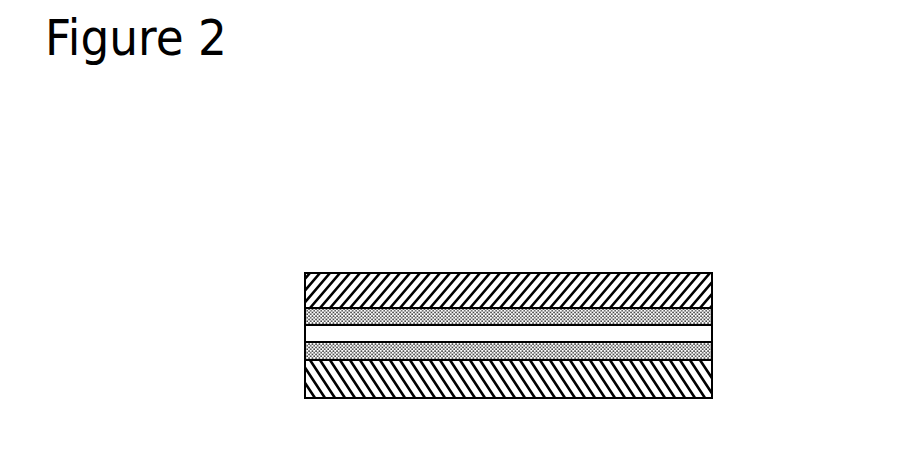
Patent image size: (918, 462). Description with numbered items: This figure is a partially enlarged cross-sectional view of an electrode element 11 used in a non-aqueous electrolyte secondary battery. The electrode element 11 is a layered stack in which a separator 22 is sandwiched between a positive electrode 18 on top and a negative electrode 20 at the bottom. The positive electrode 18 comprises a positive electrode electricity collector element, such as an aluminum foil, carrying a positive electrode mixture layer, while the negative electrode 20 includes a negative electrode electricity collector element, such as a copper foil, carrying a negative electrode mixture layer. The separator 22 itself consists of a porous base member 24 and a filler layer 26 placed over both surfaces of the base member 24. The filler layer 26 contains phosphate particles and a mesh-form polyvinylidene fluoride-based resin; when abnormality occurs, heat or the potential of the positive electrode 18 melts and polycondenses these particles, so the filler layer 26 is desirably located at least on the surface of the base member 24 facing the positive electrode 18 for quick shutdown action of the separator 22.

The laminate / layered structure 11 is at (689, 164).
The positive electrode 18 is at (714, 298).
The negative electrode 20 is at (714, 380).
The separator 22 is at (219, 288).
The porous base member 24 is at (305, 334).
The filler layer 26 is at (305, 316).